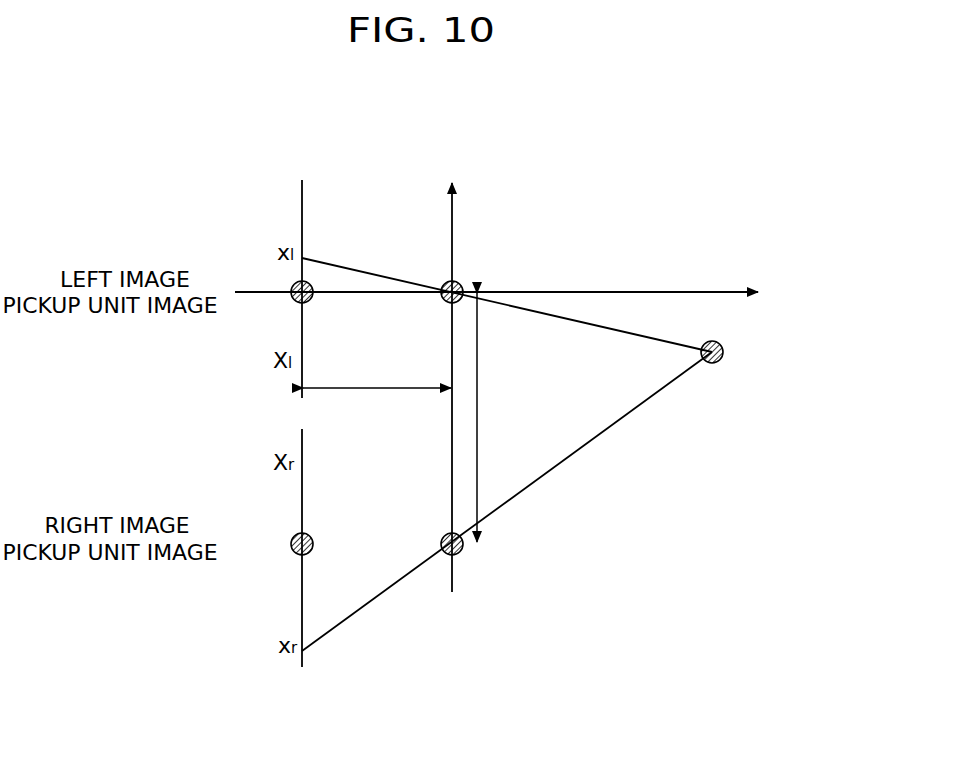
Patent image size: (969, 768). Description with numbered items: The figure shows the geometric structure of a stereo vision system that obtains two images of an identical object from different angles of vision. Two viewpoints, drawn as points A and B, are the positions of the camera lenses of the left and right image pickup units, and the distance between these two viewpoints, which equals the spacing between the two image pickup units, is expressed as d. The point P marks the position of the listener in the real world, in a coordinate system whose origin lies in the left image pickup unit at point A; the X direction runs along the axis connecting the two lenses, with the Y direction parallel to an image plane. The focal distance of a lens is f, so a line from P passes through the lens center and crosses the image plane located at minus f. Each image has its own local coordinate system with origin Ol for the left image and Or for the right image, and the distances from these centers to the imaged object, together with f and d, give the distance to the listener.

The viewpoint A is at (445, 303).
The viewpoint B is at (448, 556).
The listener position P is at (784, 352).
The left image local coordinate origin Ol is at (293, 305).
The right image local coordinate origin Or is at (287, 542).
The focal distance f is at (377, 373).
The distance between viewpoints d is at (488, 417).
The X direction X is at (451, 372).